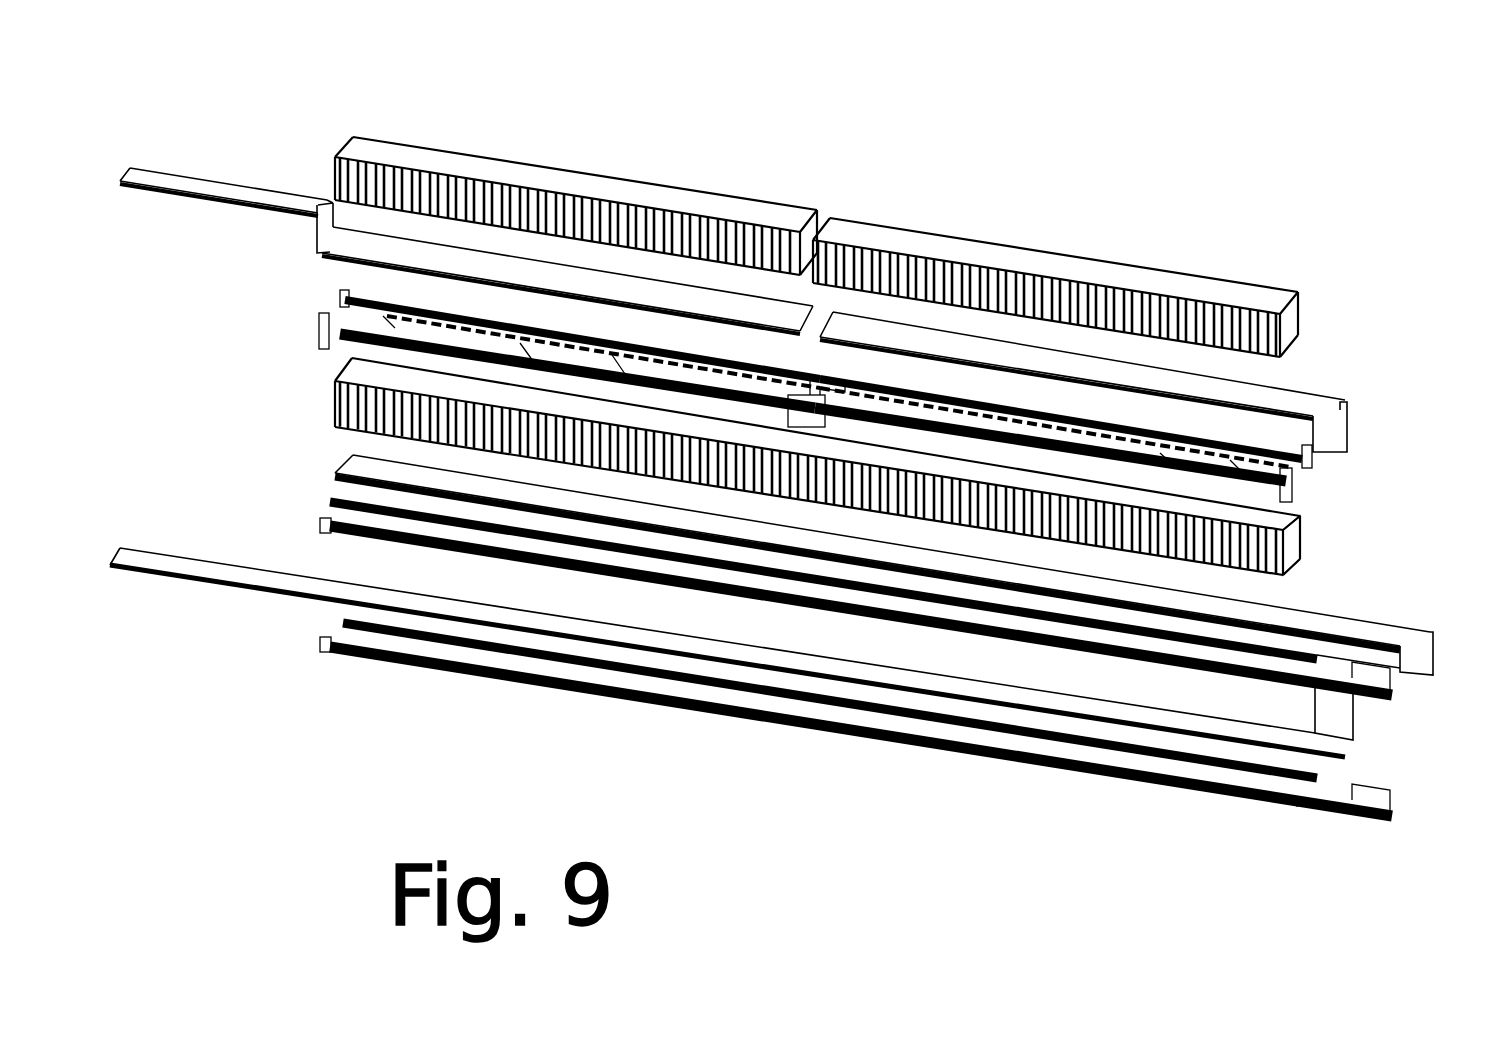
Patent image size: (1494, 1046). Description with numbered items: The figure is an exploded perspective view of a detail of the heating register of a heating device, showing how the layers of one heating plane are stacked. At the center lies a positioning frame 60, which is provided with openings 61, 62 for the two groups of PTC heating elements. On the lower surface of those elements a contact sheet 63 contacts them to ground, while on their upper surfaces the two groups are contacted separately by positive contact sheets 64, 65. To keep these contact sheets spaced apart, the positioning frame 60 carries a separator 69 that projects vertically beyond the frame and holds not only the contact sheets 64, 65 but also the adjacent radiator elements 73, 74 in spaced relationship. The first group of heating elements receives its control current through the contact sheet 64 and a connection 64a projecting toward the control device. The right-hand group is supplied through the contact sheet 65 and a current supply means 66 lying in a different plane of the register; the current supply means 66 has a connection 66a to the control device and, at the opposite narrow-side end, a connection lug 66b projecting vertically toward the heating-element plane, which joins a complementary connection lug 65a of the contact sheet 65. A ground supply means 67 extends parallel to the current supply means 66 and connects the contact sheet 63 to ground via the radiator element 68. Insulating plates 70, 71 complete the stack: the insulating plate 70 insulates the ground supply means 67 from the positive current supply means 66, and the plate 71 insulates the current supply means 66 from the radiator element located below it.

The positioning frame 60 is at (738, 425).
The opening 61 is at (647, 372).
The opening 62 is at (1143, 460).
The contact sheet 63 is at (353, 430).
The positive contact sheet 64 is at (350, 243).
The connection 64a is at (272, 202).
The positive contact sheet 65 is at (1270, 393).
The connection lug 65a is at (1327, 433).
The current supply means 66 is at (788, 674).
The connection 66a is at (273, 580).
The connection lug 66b is at (1337, 709).
The ground supply means 67 is at (1283, 614).
The radiator element 68 is at (1275, 538).
The separator 69 is at (800, 410).
The insulating plate 70 is at (373, 540).
The insulating plate 71 is at (393, 647).
The radiator element 73 is at (777, 225).
The radiator element 74 is at (1214, 292).